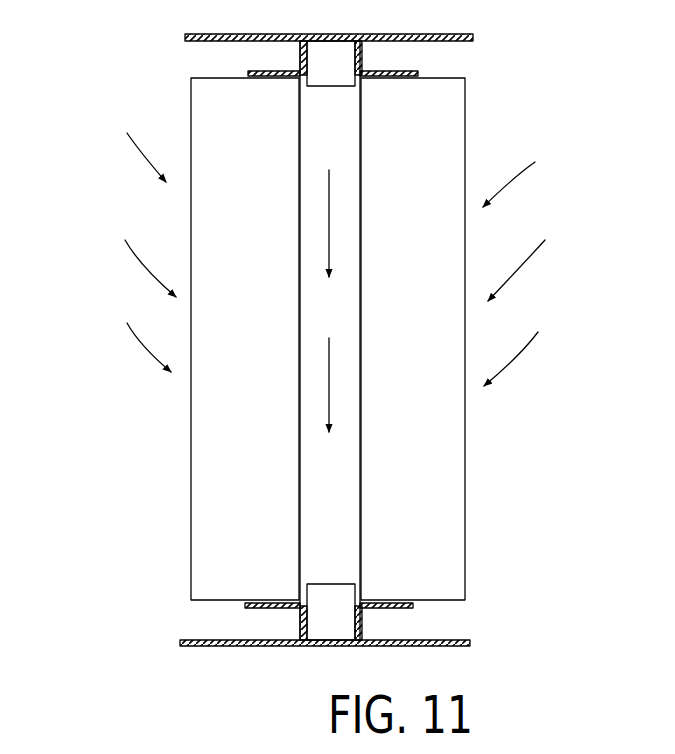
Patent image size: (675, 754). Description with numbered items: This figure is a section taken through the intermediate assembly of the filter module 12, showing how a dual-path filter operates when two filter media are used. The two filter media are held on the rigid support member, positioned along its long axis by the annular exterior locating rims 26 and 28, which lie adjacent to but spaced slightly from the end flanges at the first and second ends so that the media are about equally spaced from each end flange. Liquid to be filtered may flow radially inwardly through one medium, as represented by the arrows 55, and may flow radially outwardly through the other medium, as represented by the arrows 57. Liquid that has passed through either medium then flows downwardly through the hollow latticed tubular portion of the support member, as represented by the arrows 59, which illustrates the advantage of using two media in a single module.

The filter module 12 is at (484, 141).
The annular exterior locating rim 26 is at (248, 72).
The annular exterior locating rim 28 is at (245, 608).
The arrows representing radially inward flow 55 is at (552, 147).
The arrows representing radially outward flow 57 is at (120, 117).
The arrows representing downward flow 59 is at (329, 230).